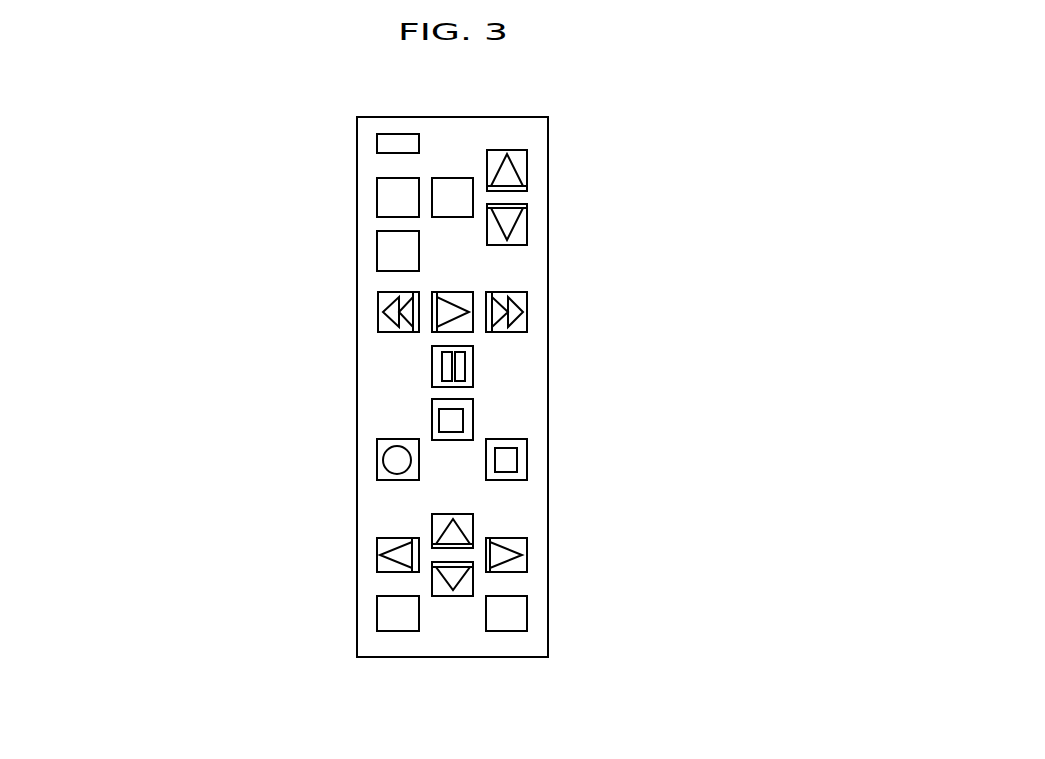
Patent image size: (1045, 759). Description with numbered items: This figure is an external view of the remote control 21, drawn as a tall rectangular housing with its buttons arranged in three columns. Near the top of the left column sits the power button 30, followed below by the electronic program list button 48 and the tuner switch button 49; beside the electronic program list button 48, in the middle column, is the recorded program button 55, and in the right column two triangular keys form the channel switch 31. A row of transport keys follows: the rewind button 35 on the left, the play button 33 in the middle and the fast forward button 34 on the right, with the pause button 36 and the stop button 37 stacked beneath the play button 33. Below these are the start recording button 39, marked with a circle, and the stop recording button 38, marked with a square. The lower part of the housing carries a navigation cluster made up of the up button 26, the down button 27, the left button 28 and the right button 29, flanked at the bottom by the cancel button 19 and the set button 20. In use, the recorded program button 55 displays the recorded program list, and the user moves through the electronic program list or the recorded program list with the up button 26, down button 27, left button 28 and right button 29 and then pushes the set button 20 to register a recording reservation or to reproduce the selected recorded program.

The remote control 21 is at (395, 117).
The power button 30 is at (377, 143).
The electronic program list button 48 is at (377, 200).
The recorded program button 55 is at (455, 178).
The tuner switch button 49 is at (377, 255).
The channel switch 31 is at (527, 165).
The rewind button 35 is at (378, 312).
The play button 33 is at (455, 291).
The fast forward button 34 is at (527, 312).
The pause button 36 is at (473, 366).
The stop button 37 is at (432, 420).
The start recording button 39 is at (377, 464).
The stop recording button 38 is at (527, 464).
The up button 26 is at (473, 520).
The down button 27 is at (450, 597).
The left button 28 is at (377, 556).
The right button 29 is at (527, 553).
The cancel button 19 is at (377, 614).
The set button 20 is at (527, 612).